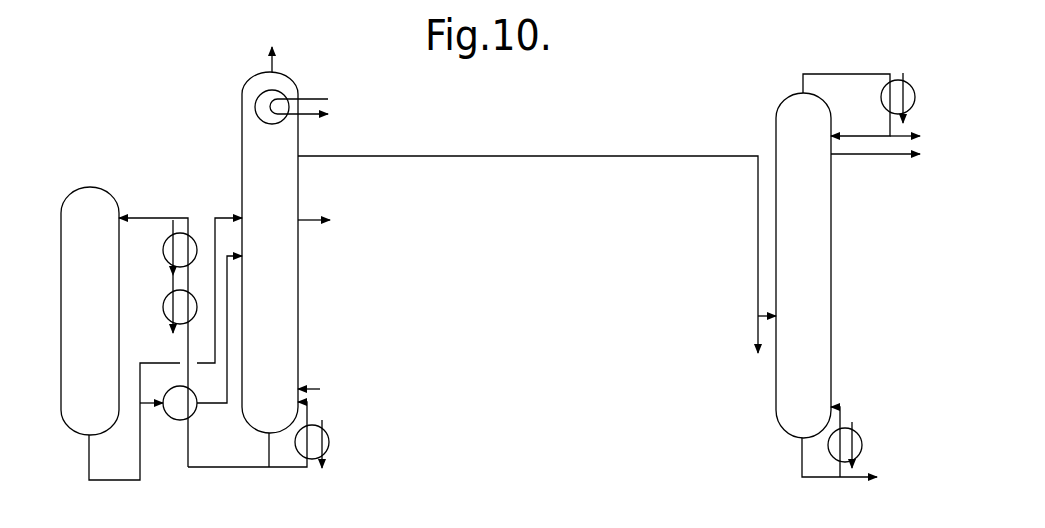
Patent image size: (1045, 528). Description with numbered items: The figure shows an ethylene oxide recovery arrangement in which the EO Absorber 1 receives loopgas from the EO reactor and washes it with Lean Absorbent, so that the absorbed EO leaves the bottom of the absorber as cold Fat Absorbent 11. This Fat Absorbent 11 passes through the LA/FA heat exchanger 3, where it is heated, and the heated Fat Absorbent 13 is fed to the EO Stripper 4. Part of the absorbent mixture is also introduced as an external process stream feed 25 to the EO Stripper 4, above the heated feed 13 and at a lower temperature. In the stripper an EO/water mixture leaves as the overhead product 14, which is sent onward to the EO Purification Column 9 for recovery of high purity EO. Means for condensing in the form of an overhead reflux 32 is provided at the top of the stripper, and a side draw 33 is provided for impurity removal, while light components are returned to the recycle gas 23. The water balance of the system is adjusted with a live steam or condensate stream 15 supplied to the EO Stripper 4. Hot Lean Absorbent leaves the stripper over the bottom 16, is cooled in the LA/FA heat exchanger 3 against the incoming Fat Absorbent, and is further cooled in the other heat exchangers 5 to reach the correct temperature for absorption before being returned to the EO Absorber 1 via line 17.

The EO Absorber 1 is at (85, 197).
The LA/FA heat exchanger 3 is at (173, 414).
The EO Stripper 4 is at (273, 292).
The heat exchangers 5 is at (168, 253).
The EO Purification Column 9 is at (803, 246).
The Fat Absorbent 11 is at (88, 447).
The heated Fat Absorbent 13 is at (234, 255).
The overhead product 14 is at (301, 158).
The live steam or condensate stream 15 is at (308, 388).
The bottom stream of hot Lean Absorbent 16 is at (268, 443).
The line 17 is at (137, 216).
The recycle gas 23 is at (270, 60).
The external process stream feed 25 is at (234, 216).
The overhead reflux 32 is at (323, 99).
The side draw 33 is at (310, 225).